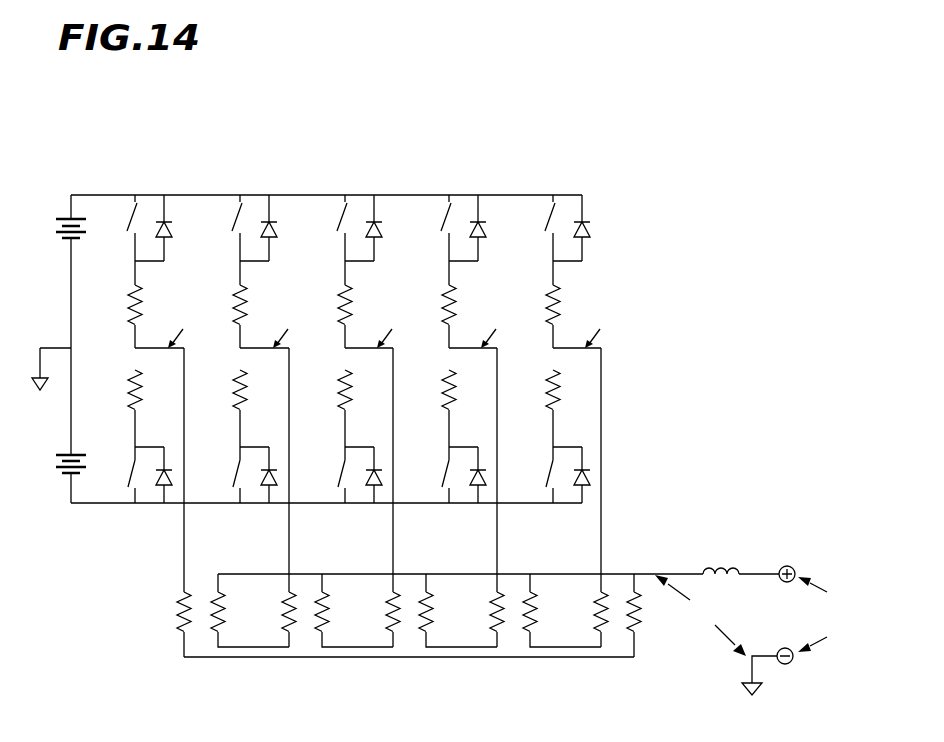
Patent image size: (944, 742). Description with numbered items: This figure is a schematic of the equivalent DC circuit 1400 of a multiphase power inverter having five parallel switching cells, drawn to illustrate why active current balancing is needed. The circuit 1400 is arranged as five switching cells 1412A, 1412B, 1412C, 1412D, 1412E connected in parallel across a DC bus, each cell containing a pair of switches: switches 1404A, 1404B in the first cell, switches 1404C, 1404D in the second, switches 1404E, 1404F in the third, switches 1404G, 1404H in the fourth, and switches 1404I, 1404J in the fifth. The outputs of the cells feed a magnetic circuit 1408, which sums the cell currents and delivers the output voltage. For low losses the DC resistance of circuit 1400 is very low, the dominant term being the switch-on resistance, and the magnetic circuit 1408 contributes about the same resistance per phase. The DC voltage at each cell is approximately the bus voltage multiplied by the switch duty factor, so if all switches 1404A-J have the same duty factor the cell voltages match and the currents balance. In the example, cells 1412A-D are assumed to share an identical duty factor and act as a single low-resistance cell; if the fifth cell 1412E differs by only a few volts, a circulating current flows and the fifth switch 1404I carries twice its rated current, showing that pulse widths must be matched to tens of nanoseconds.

The equivalent DC circuit 1400 is at (680, 218).
The switch 1404A is at (136, 208).
The switch 1404B is at (128, 486).
The switch 1404C is at (241, 206).
The switch 1404D is at (233, 486).
The switch 1404E is at (345, 210).
The switch 1404F is at (338, 486).
The switch 1404G is at (450, 212).
The switch 1404H is at (442, 486).
The fifth switch 1404I is at (551, 210).
The switch 1404J is at (546, 486).
The magnetic circuit 1408 is at (290, 680).
The switching cell 1412A is at (162, 110).
The switching cell 1412B is at (262, 100).
The switching cell 1412C is at (337, 106).
The switching cell 1412D is at (427, 120).
The fifth cell 1412E is at (545, 112).